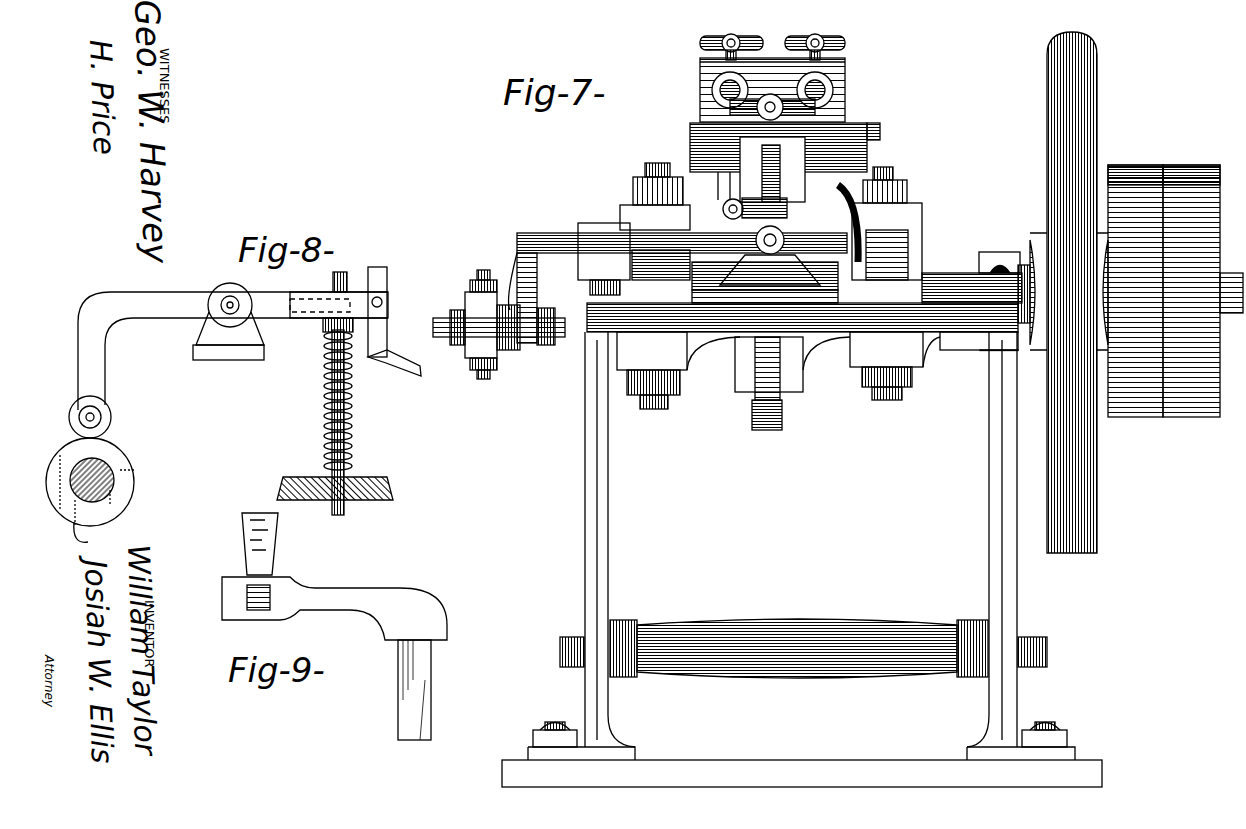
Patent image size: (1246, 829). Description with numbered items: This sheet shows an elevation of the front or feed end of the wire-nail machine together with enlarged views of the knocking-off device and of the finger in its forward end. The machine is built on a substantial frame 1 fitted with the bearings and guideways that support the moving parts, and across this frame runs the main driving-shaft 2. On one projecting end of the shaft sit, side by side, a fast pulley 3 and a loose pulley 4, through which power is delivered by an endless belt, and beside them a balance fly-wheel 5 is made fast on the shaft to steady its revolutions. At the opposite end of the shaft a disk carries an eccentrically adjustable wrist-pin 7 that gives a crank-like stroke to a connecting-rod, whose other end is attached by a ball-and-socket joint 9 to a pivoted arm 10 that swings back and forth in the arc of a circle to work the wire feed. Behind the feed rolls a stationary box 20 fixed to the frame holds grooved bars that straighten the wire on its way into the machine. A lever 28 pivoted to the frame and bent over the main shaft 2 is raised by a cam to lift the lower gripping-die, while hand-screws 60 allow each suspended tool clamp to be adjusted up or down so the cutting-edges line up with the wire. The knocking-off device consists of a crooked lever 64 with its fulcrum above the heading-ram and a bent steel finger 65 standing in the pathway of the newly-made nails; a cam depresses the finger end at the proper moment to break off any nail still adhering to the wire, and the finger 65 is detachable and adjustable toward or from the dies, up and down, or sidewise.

In FIG. 7, the frame 1 is at (802, 526).
In FIG. 7, the main driving-shaft 2 is at (1082, 282).
In FIG. 8, the main driving-shaft 2 is at (95, 490).
In FIG. 7, the fast pulley 3 is at (1135, 280).
In FIG. 7, the loose pulley 4 is at (1191, 280).
In FIG. 7, the balance fly-wheel 5 is at (1070, 292).
In FIG. 7, the wrist-pin 7 is at (498, 323).
In FIG. 7, the ball-and-socket joint 9 is at (481, 324).
In FIG. 7, the pivoted arm 10 is at (678, 277).
In FIG. 7, the stationary box 20 is at (765, 262).
In FIG. 7, the lever 28 is at (780, 383).
In FIG. 7, the hand-screws 60 is at (772, 36).
In FIG. 8, the crooked lever 64 is at (228, 355).
In FIG. 8, the bent steel finger 65 is at (394, 321).
In FIG. 9, the bent steel finger 65 is at (334, 626).